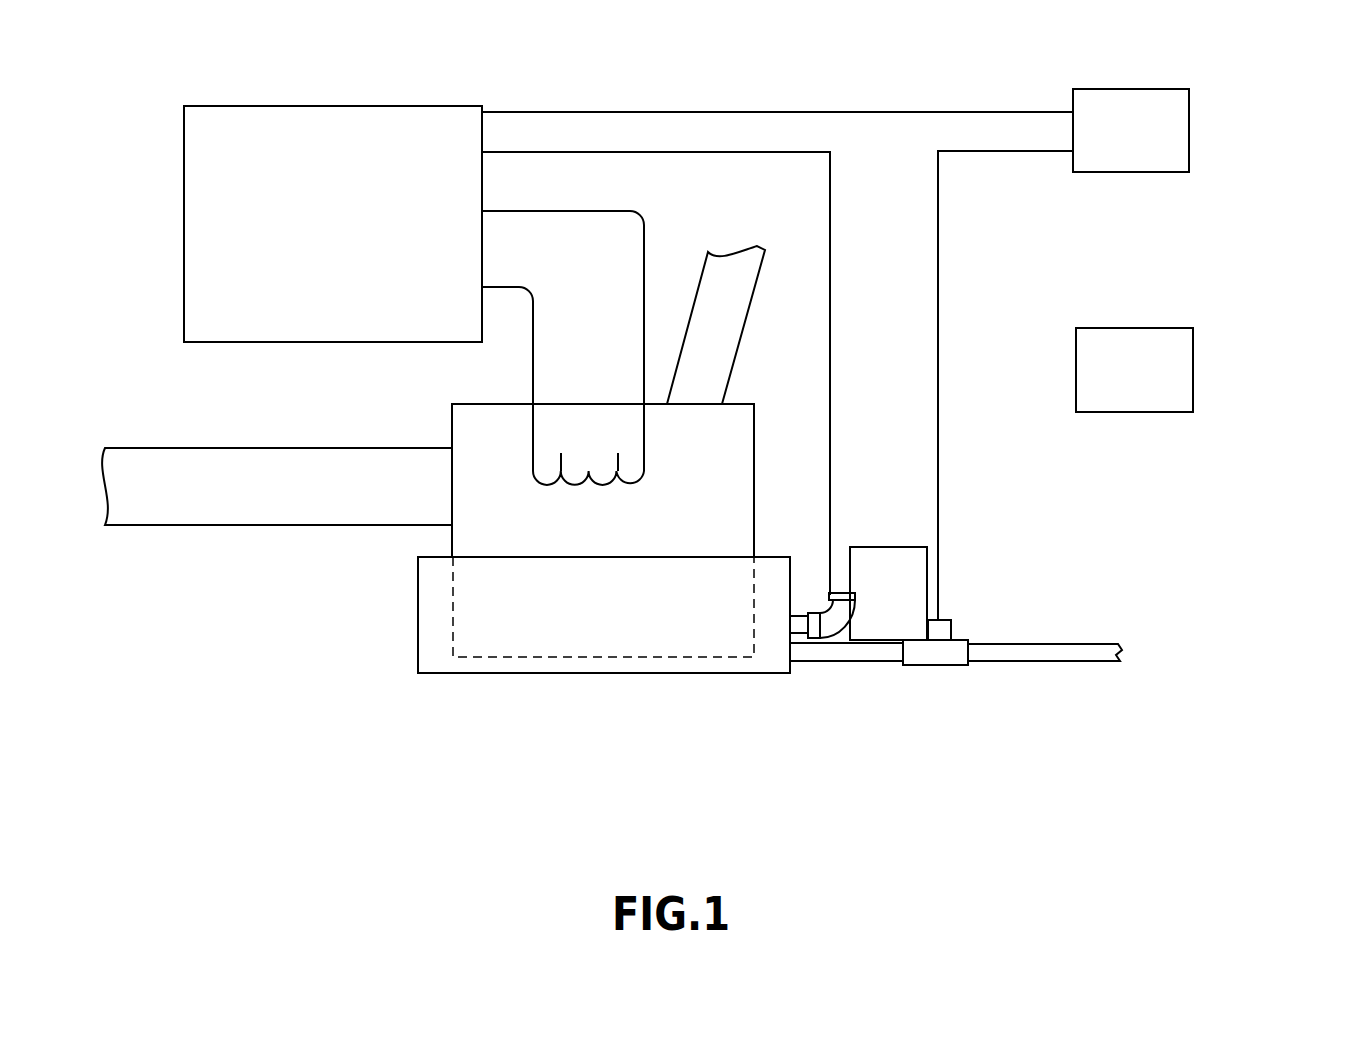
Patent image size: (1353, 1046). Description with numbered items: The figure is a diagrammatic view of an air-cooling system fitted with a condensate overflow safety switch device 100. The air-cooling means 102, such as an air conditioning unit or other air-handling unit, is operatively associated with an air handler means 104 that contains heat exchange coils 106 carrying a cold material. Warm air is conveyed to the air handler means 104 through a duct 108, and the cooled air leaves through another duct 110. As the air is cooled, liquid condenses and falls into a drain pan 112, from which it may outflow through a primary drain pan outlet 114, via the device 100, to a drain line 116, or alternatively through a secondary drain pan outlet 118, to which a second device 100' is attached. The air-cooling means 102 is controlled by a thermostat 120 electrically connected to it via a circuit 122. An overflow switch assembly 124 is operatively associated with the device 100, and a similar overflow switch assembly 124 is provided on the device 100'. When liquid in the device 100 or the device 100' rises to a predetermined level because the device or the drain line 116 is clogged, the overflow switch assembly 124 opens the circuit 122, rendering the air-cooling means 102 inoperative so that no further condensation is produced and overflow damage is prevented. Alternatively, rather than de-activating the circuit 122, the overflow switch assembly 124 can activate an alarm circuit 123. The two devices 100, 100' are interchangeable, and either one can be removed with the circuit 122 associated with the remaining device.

The condensate overflow safety switch device 100 is at (974, 611).
The device 100' is at (889, 593).
The air-cooling means 102 is at (184, 174).
The air handler means 104 is at (755, 438).
The heat exchange coils 106 is at (590, 471).
The duct 108 is at (755, 292).
The duct 110 is at (246, 448).
The drain pan 112 is at (418, 595).
The primary drain pan outlet 114 is at (850, 663).
The drain line 116 is at (1060, 643).
The secondary drain pan outlet 118 is at (807, 613).
The thermostat 120 is at (1189, 133).
The circuit 122 is at (892, 547).
The alarm circuit 123 is at (1193, 362).
The overflow switch assembly 124 is at (841, 593).